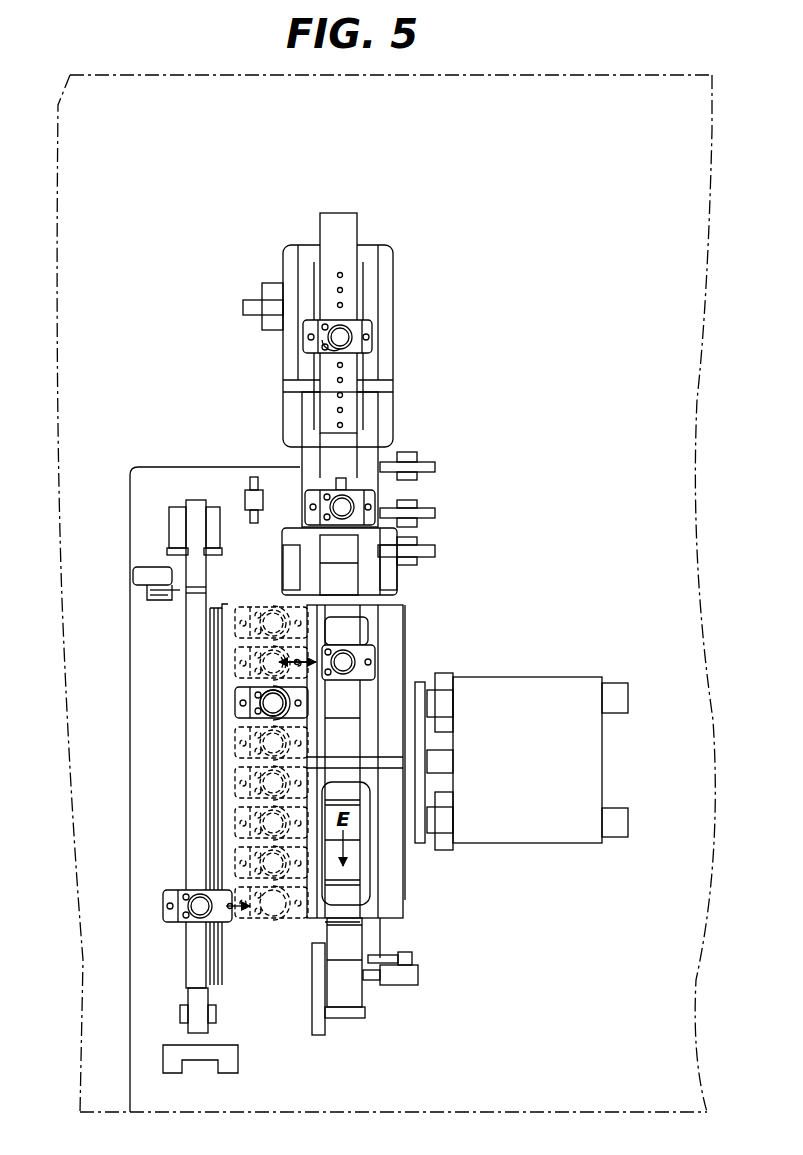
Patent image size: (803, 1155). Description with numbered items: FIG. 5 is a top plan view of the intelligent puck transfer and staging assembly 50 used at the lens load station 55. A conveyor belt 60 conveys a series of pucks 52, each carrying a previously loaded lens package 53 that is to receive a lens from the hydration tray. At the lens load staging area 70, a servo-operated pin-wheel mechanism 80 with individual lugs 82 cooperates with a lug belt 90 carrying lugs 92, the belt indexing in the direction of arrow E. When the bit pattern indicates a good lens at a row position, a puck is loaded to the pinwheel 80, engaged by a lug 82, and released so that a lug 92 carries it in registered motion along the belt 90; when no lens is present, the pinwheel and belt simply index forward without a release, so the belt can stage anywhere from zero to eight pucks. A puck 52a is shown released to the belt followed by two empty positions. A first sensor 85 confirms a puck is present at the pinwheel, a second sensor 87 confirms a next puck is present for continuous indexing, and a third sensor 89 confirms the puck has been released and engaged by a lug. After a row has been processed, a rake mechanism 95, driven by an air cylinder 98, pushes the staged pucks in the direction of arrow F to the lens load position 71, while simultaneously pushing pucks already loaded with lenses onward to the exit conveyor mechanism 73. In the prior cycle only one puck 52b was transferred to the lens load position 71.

The intelligent puck transfer and staging assembly 50 is at (420, 948).
The puck 52 is at (362, 317).
The puck 52a is at (352, 640).
The puck 52b is at (274, 692).
The lens package 53 is at (331, 354).
The lens load station 55 is at (72, 993).
The conveyor belt 60 is at (362, 211).
The lens load staging area 70 is at (402, 1050).
The lens load position 71 is at (308, 930).
The exit conveyor mechanism 73 is at (233, 737).
The servo-operated pin-wheel mechanism 80 is at (378, 491).
The lug 82 is at (345, 478).
The first sensor 85 is at (435, 512).
The second sensor 87 is at (435, 462).
The third sensor 89 is at (435, 553).
The lug belt 90 is at (396, 545).
The lug 92 is at (352, 575).
The rake mechanism 95 is at (310, 722).
The air cylinder 98 is at (540, 837).